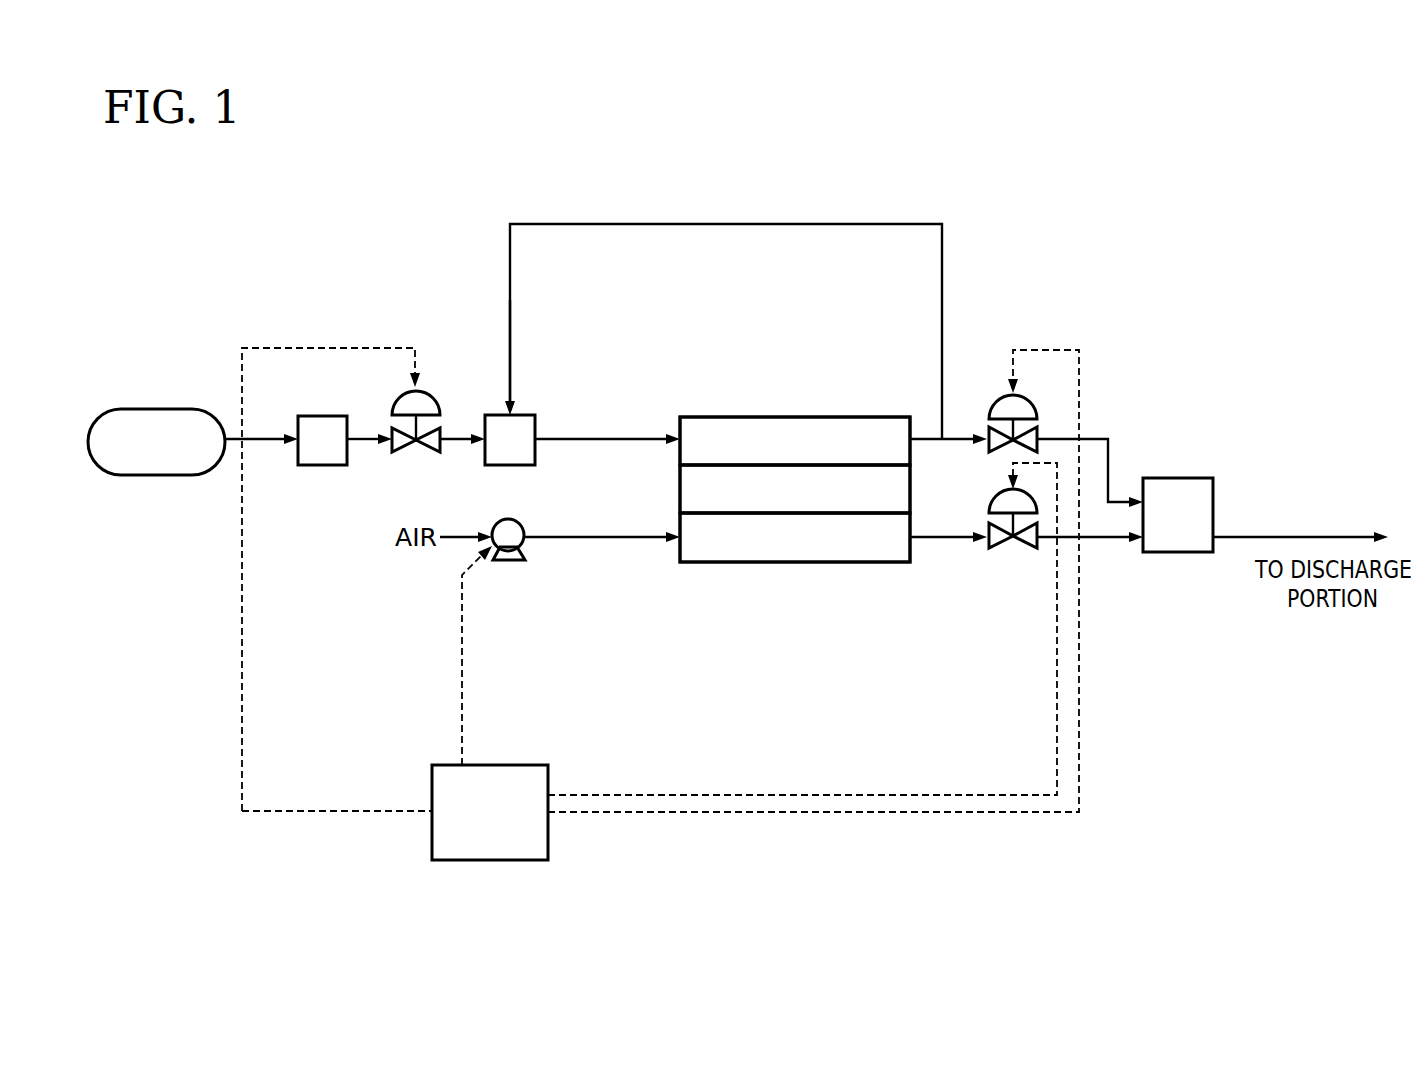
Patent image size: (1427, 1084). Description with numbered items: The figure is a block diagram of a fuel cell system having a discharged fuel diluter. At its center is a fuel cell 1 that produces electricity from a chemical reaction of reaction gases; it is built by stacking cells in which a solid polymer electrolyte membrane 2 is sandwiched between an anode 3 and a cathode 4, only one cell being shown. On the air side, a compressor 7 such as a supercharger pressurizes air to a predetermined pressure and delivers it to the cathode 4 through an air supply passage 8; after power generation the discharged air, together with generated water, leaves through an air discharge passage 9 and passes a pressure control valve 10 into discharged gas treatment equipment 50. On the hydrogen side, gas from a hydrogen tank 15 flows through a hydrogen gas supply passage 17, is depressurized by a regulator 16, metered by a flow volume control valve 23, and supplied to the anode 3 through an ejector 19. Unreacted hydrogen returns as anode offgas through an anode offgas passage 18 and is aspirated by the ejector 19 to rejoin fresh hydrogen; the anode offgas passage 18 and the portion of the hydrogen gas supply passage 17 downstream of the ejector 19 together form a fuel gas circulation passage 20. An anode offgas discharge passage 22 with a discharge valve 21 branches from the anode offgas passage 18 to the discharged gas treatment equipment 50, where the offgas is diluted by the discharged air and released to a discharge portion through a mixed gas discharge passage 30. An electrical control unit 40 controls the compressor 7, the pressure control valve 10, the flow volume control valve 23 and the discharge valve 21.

The fuel cell 1 is at (816, 415).
The solid polymer electrolyte membrane 2 is at (900, 488).
The anode 3 is at (864, 425).
The cathode 4 is at (869, 548).
The compressor 7 is at (508, 563).
The air supply passage 8 is at (594, 541).
The air discharge passage 9 is at (946, 541).
The pressure control valve 10 is at (1022, 551).
The hydrogen tank 15 is at (158, 408).
The regulator 16 is at (326, 468).
The hydrogen gas supply passage 17 is at (268, 437).
The anode offgas passage 18 is at (798, 222).
The ejector 19 is at (521, 413).
The fuel gas circulation passage 20 is at (673, 205).
The discharge valve 21 is at (1000, 392).
The anode offgas discharge passage 22 is at (965, 435).
The flow volume control valve 23 is at (433, 395).
The mixed gas discharge passage 30 is at (1248, 535).
The electrical control unit (ECU) 40 is at (522, 762).
The discharged gas treatment equipment 50 is at (1180, 554).